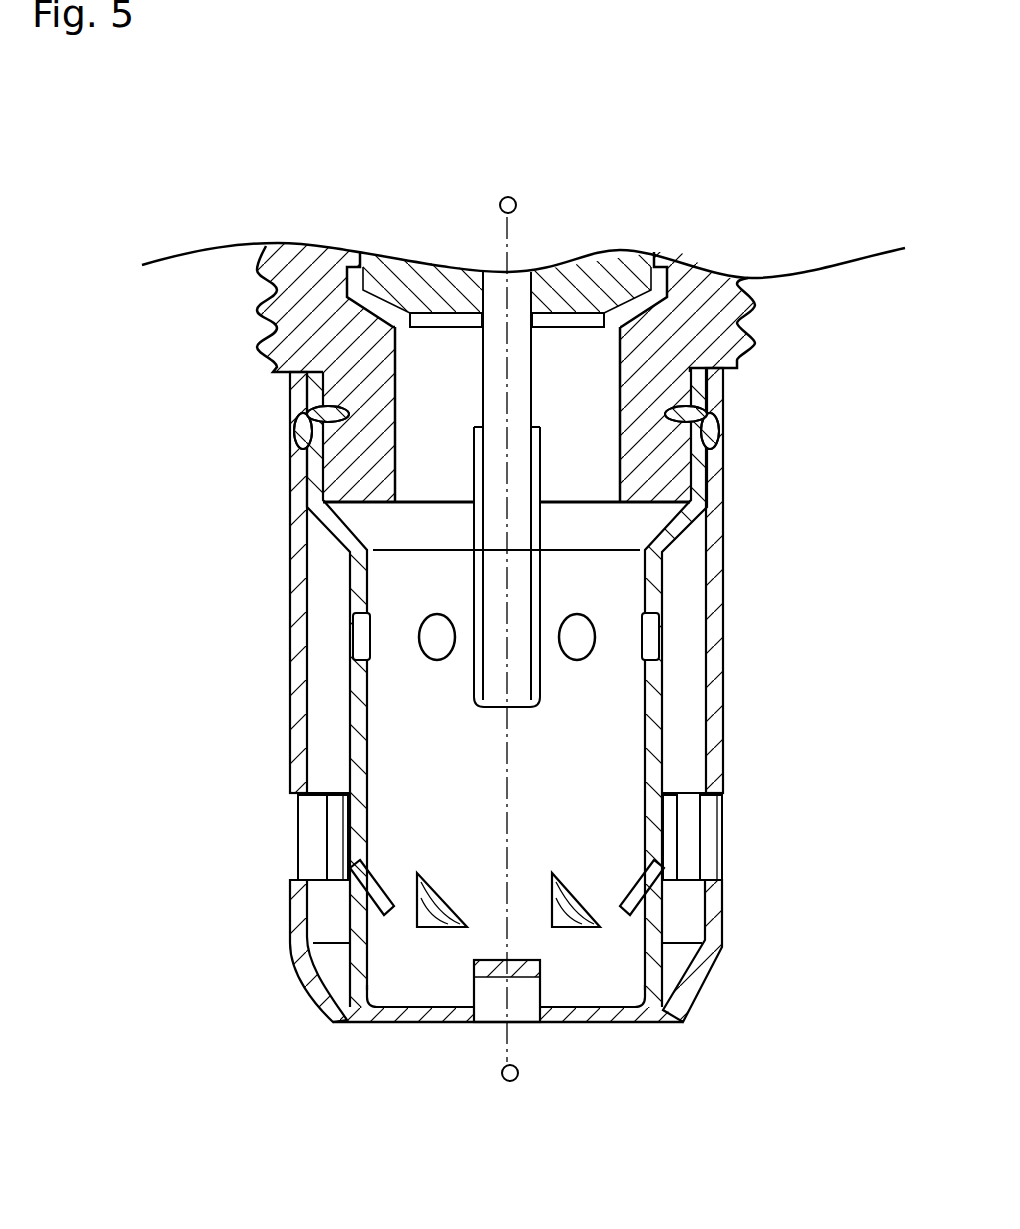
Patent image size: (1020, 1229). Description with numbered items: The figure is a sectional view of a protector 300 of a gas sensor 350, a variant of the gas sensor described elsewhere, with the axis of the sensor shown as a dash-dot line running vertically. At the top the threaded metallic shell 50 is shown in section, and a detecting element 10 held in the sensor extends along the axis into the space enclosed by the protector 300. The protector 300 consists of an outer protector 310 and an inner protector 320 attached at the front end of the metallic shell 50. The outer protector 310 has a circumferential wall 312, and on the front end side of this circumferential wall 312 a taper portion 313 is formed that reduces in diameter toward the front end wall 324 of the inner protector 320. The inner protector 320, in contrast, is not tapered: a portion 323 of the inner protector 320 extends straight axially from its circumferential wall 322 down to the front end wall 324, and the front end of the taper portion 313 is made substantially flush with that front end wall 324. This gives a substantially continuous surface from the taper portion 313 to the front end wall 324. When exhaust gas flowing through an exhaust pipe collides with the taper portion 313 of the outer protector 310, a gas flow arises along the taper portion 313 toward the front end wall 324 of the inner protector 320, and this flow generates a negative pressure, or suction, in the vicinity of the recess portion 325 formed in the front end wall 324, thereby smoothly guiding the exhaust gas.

The gas sensor 350 is at (807, 168).
The metallic shell 50 is at (782, 327).
The detecting element 10 is at (540, 372).
The circumferential wall 322 is at (357, 713).
The circumferential wall 312 is at (300, 762).
The portion 323 is at (355, 962).
The taper portion 313 is at (320, 1007).
The front end wall 324 is at (443, 1020).
The recess portion 325 is at (487, 1045).
The inner protector 320 is at (668, 1036).
The outer protector 310 is at (755, 965).
The protector 300 is at (832, 1040).